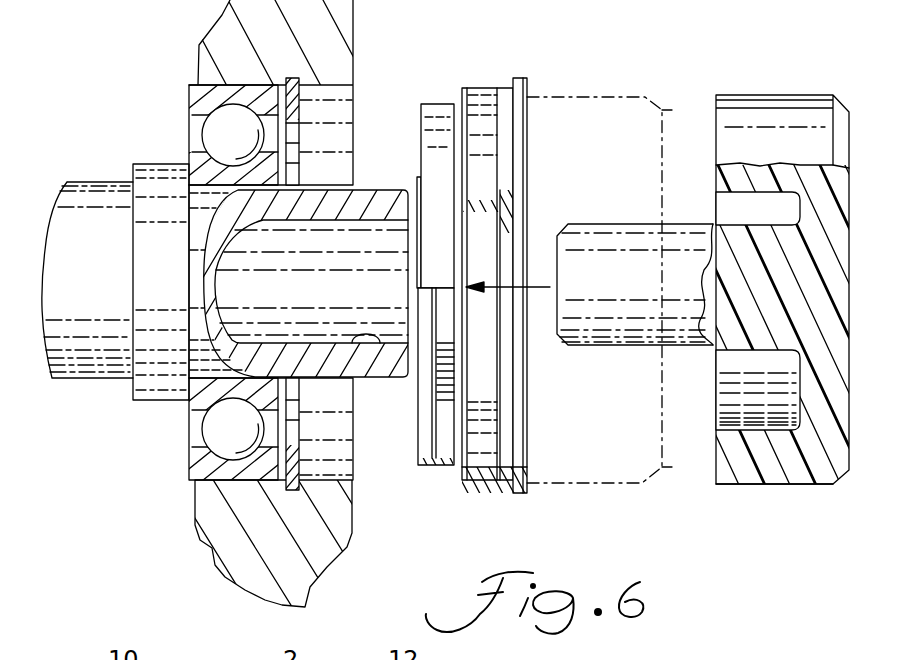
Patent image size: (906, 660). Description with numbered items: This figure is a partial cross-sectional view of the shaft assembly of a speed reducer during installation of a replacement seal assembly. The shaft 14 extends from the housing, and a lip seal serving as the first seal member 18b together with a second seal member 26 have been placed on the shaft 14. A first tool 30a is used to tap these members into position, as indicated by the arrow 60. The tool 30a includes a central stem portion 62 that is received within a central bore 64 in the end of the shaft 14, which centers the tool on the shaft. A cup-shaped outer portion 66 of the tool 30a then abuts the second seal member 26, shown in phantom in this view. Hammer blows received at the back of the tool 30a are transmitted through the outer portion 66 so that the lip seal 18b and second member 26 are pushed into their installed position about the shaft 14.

The shaft 14 is at (383, 200).
The first seal member 18b is at (437, 104).
The second seal member 26 is at (488, 88).
The first tool 30a is at (553, 95).
The arrow 60 is at (534, 287).
The central stem portion 62 is at (637, 348).
The central bore 64 is at (384, 340).
The cup-shaped outer portion 66 is at (772, 484).